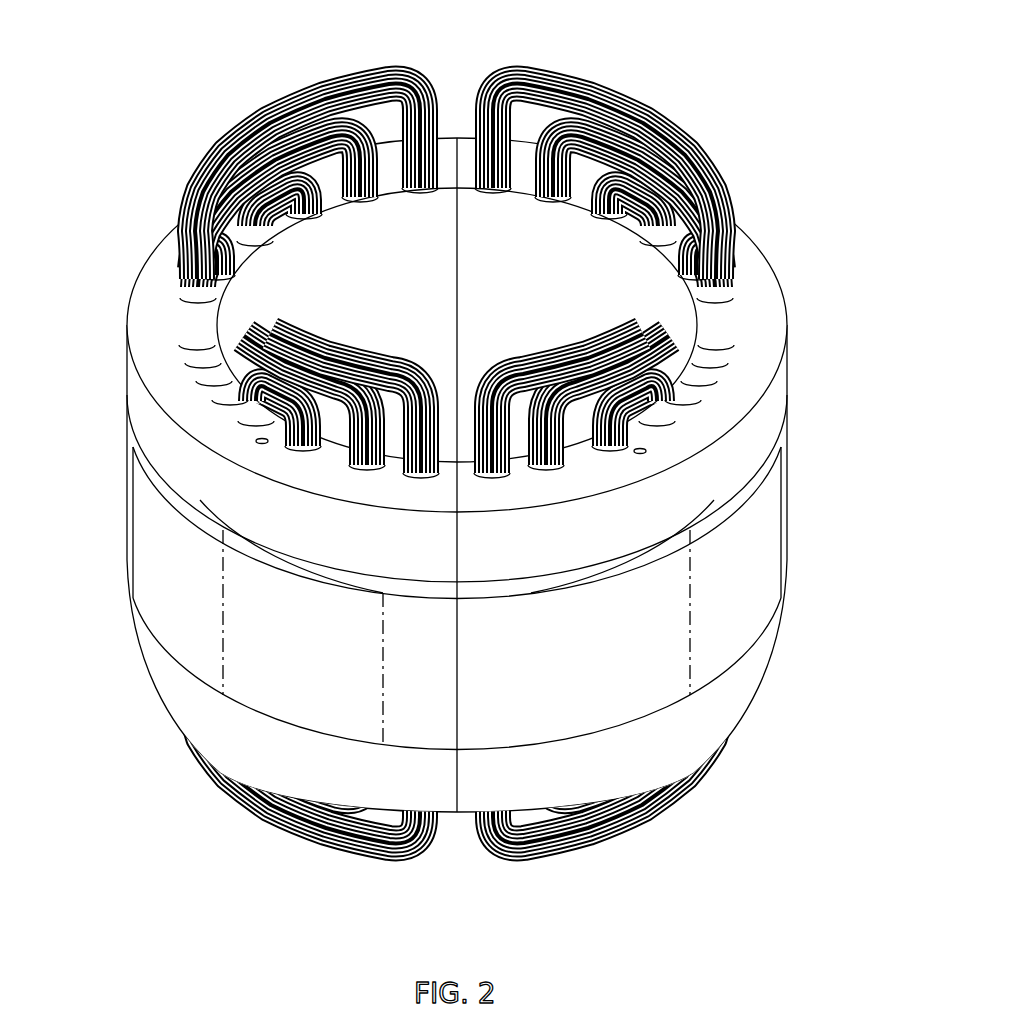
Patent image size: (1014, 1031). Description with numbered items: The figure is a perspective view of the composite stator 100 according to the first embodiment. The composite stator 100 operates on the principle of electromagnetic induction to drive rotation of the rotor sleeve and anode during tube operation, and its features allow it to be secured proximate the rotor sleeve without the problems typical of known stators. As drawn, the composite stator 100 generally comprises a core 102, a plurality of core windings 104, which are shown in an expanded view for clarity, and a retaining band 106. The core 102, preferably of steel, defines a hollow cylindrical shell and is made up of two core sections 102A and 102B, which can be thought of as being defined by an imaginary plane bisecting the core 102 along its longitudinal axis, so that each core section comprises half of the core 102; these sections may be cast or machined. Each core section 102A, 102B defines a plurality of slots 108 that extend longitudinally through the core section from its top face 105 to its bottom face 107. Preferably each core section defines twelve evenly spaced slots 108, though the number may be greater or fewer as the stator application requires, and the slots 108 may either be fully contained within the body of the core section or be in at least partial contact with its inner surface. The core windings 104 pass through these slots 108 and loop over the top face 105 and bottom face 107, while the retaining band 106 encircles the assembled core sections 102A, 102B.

The composite stator 100 is at (795, 183).
The core 102 is at (758, 312).
The core section 102A is at (318, 537).
The core section 102B is at (643, 537).
The core windings 104 is at (247, 117).
The top face 105 is at (258, 443).
The retaining band 106 is at (757, 572).
The bottom face 107 is at (757, 705).
The slots 108 is at (308, 218).